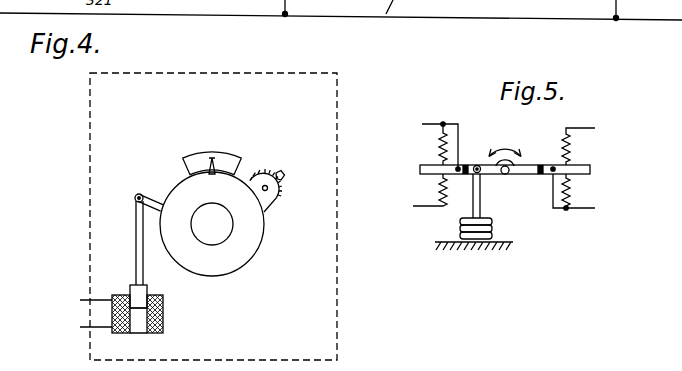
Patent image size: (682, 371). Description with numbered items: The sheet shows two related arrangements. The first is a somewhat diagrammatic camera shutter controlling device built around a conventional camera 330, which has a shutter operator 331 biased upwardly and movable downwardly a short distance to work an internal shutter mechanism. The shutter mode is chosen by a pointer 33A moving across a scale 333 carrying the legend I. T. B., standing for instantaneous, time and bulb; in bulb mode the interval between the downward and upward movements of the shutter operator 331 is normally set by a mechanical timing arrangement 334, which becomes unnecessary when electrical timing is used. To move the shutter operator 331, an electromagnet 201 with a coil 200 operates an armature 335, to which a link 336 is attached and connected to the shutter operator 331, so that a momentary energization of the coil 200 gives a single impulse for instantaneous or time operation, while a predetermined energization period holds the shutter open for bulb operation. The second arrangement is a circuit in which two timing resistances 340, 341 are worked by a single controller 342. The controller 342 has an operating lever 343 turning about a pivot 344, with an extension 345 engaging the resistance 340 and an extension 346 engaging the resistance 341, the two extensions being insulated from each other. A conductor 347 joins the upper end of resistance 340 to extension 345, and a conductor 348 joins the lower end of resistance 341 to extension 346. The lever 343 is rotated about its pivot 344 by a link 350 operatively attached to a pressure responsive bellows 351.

In FIG. 4, the camera 330 is at (91, 105).
In FIG. 4, the shutter operator 331 is at (148, 192).
In FIG. 4, the scale 333 is at (200, 153).
In FIG. 4, the pointer 33A is at (217, 163).
In FIG. 4, the mechanical timing arrangement 334 is at (281, 202).
In FIG. 4, the armature 335 is at (130, 293).
In FIG. 4, the link 336 is at (136, 232).
In FIG. 4, the coil 200 is at (164, 320).
In FIG. 4, the electromagnet 201 is at (179, 294).
In FIG. 5, the timing resistance 340 is at (440, 143).
In FIG. 5, the timing resistance 341 is at (571, 149).
In FIG. 5, the controller 342 is at (502, 138).
In FIG. 5, the operating lever 343 is at (527, 175).
In FIG. 5, the pivot 344 is at (502, 178).
In FIG. 5, the extension 345 is at (428, 174).
In FIG. 5, the extension 346 is at (590, 176).
In FIG. 5, the conductor 347 is at (459, 140).
In FIG. 5, the conductor 348 is at (553, 209).
In FIG. 5, the link 350 is at (472, 187).
In FIG. 5, the pressure responsive bellows 351 is at (463, 229).